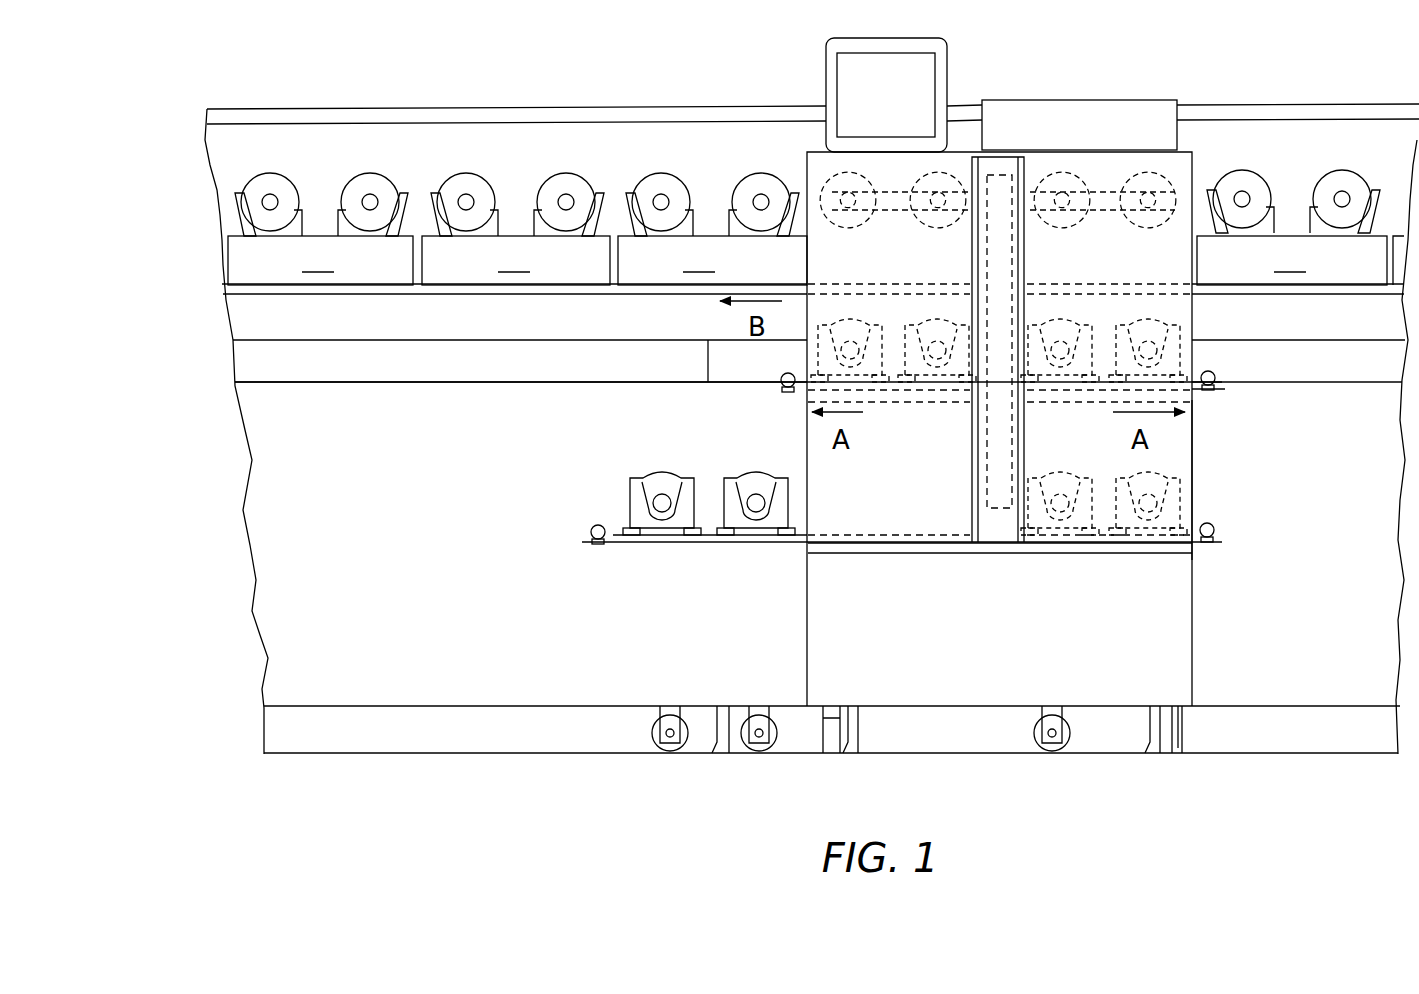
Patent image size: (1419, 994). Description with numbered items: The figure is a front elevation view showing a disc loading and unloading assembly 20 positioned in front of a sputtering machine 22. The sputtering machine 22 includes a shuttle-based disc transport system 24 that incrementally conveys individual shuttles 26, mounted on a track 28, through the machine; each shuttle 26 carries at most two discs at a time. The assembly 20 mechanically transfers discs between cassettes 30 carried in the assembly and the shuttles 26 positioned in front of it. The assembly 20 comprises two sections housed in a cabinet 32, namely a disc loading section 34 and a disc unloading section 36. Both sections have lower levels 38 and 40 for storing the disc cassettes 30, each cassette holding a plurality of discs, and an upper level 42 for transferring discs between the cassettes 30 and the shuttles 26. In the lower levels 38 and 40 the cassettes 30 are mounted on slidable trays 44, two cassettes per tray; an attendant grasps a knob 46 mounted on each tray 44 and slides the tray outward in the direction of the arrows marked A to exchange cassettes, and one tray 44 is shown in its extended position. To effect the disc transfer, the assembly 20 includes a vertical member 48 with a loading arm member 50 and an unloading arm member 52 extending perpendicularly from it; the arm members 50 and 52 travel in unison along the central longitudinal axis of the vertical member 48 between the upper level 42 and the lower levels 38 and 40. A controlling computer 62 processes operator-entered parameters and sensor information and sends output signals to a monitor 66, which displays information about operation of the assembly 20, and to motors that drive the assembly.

The disc loading and unloading assembly 20 is at (1044, 353).
The sputtering machine 22 is at (813, 85).
The shuttle-based disc transport system 24 is at (200, 250).
The shuttle 26 is at (816, 260).
The track 28 is at (807, 251).
The cassette 30 is at (905, 457).
The cabinet 32 is at (1034, 418).
The disc loading section 34 is at (904, 573).
The disc unloading section 36 is at (1083, 565).
The lower level 38 is at (1232, 328).
The lower level 40 is at (1195, 487).
The upper level 42 is at (1151, 218).
The slidable tray 44 is at (832, 380).
The knob 46 is at (780, 385).
The vertical member 48 is at (998, 302).
The loading arm member 50 is at (894, 222).
The unloading arm member 52 is at (1102, 222).
The controlling computer 62 is at (1079, 104).
The monitor 66 is at (886, 76).